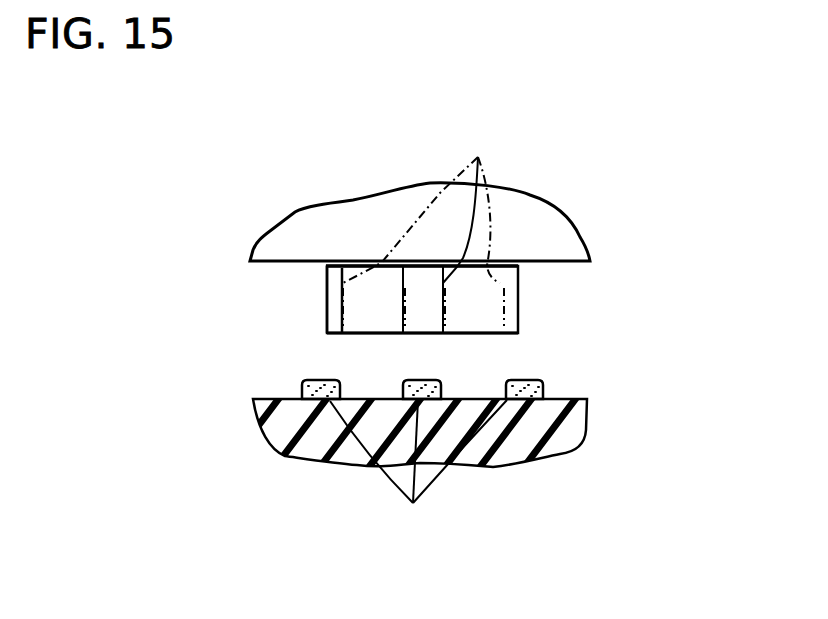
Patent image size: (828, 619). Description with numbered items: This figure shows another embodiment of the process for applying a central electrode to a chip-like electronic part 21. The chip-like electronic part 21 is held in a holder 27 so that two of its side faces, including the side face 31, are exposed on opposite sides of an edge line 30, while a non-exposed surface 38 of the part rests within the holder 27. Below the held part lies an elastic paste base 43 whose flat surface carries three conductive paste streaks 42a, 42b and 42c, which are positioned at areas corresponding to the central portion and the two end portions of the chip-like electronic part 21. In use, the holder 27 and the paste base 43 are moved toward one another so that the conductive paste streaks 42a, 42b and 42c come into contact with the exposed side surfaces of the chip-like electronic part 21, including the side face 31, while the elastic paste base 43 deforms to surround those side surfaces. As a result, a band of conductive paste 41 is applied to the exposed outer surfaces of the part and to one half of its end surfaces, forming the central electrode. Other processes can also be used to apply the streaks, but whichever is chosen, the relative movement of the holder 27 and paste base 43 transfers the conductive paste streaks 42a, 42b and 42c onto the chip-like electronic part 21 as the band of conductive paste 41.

The holder 27 is at (290, 208).
The band of conductive paste 41 is at (418, 334).
The non-exposed surface 38 is at (523, 263).
The chip-like electronic part 21 is at (325, 290).
The side face 31 is at (485, 306).
The edge line 30 is at (340, 333).
The conductive paste streak 42a is at (433, 380).
The conductive paste streak 42b is at (302, 383).
The conductive paste streak 42c is at (549, 382).
The paste base 43 is at (590, 432).